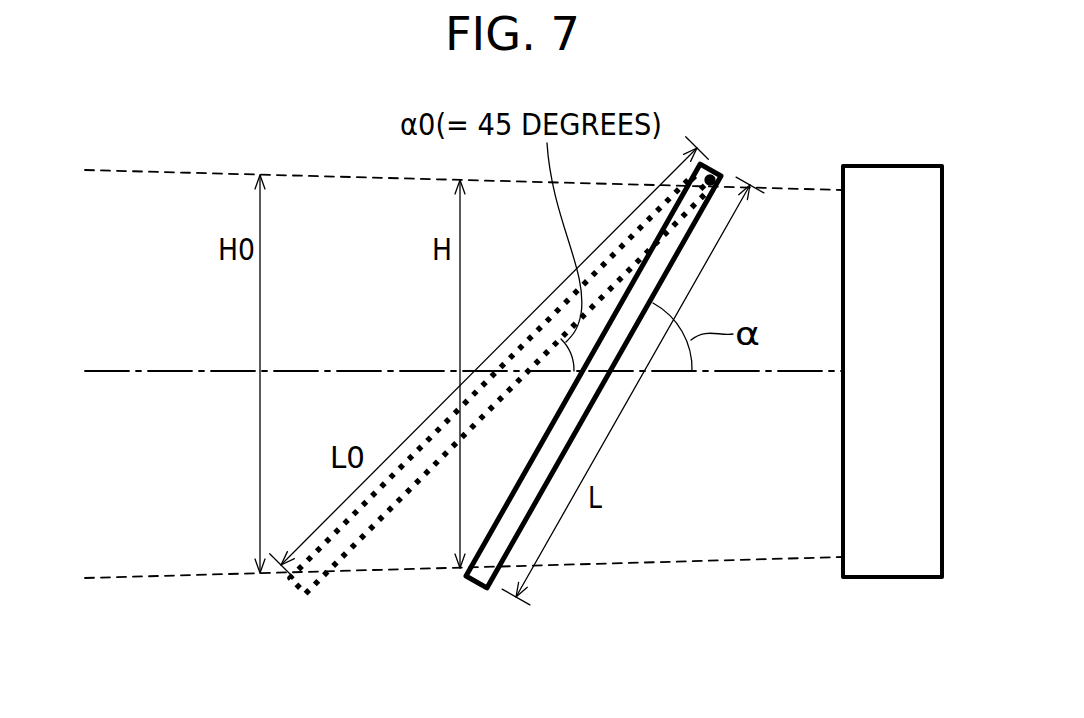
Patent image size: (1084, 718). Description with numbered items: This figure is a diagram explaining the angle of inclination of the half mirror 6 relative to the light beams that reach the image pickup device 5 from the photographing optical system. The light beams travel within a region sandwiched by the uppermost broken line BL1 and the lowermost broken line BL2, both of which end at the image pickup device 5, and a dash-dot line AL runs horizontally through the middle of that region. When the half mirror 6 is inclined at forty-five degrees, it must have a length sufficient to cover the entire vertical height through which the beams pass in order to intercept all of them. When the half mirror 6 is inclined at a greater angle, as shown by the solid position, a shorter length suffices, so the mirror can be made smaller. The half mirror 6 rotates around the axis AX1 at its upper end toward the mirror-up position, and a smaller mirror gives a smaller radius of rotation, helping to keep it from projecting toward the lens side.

The image pickup device 5 is at (886, 167).
The half mirror 6 is at (299, 583).
The axis AX1 is at (712, 178).
The optical axis AL is at (106, 371).
The uppermost broken line BL1 is at (783, 188).
The lowermost broken line BL2 is at (700, 558).